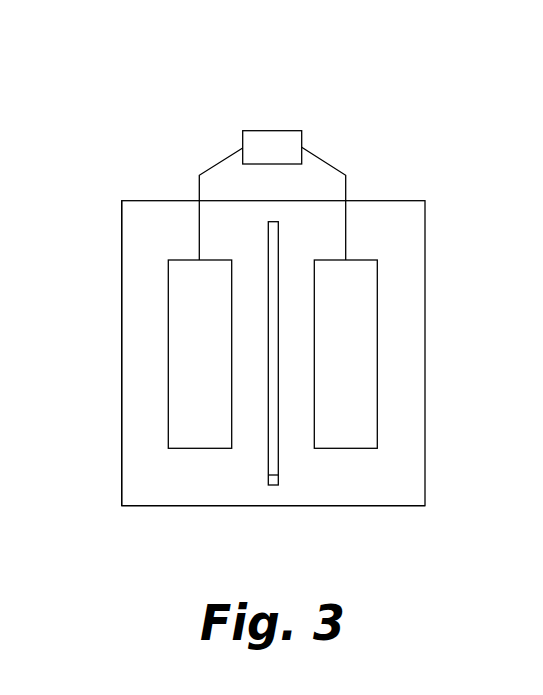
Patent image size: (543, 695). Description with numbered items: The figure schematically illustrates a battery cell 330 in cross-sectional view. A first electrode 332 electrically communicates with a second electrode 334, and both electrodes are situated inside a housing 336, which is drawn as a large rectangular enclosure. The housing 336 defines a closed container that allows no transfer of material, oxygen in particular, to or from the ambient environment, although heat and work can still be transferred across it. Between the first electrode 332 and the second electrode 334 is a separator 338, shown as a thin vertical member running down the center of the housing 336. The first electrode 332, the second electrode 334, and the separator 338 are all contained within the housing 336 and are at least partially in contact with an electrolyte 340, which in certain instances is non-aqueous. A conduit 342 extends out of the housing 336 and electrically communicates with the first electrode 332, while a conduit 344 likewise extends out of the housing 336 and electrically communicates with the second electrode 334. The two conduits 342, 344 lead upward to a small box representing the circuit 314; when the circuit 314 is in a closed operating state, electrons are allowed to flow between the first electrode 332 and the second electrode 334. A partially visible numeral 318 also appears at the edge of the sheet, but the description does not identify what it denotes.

The circuit 314 is at (272, 131).
The lead 318 is at (11, 101).
The battery cell 330 is at (100, 523).
The first electrode 332 is at (188, 287).
The second electrode 334 is at (357, 287).
The housing 336 is at (417, 486).
The separator 338 is at (272, 485).
The electrolyte 340 is at (198, 482).
The conduit 342 is at (224, 158).
The conduit 344 is at (323, 156).